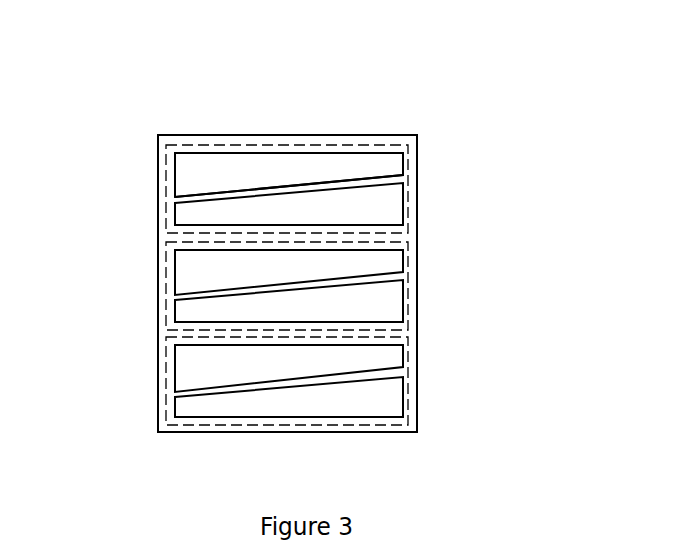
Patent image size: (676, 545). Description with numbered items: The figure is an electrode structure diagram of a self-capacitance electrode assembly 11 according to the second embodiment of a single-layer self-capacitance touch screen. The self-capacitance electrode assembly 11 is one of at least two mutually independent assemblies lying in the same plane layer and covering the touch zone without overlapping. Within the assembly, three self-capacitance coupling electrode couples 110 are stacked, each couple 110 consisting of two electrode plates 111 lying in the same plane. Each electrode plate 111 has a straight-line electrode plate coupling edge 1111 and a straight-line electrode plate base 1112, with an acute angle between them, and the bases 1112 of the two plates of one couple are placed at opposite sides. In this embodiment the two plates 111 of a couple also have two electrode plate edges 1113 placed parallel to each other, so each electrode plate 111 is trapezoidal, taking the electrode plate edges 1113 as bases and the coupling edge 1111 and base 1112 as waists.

The self-capacitance electrode assembly 11 is at (327, 432).
The self-capacitance coupling electrode couple 110 is at (167, 165).
The electrode plate 111 is at (243, 170).
The electrode plate coupling edge 1111 is at (292, 183).
The electrode plate base 1112 is at (353, 153).
The electrode plate edge 1113 is at (173, 180).